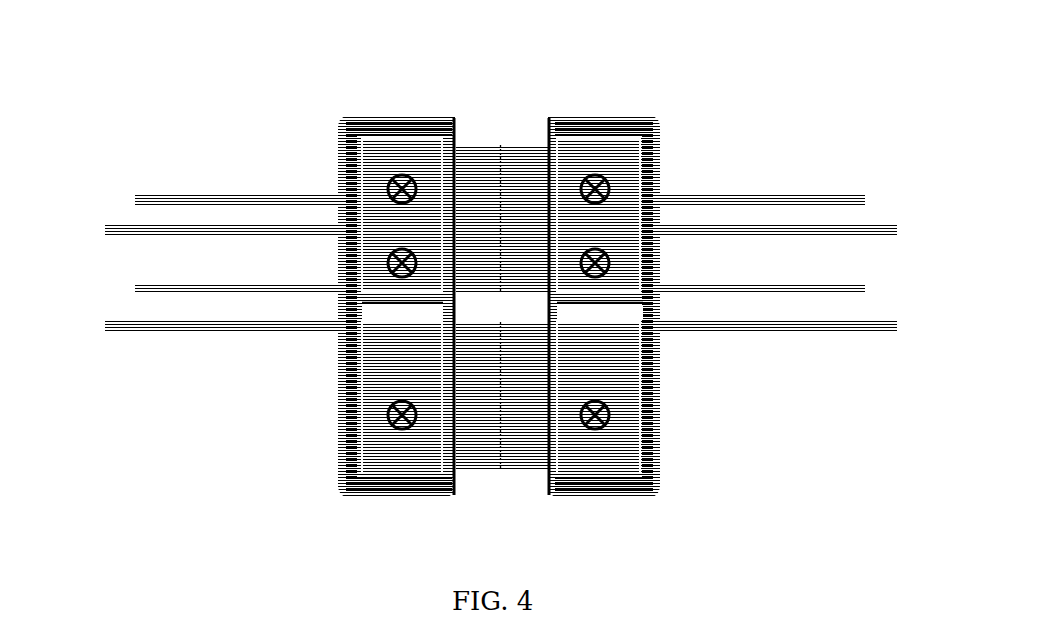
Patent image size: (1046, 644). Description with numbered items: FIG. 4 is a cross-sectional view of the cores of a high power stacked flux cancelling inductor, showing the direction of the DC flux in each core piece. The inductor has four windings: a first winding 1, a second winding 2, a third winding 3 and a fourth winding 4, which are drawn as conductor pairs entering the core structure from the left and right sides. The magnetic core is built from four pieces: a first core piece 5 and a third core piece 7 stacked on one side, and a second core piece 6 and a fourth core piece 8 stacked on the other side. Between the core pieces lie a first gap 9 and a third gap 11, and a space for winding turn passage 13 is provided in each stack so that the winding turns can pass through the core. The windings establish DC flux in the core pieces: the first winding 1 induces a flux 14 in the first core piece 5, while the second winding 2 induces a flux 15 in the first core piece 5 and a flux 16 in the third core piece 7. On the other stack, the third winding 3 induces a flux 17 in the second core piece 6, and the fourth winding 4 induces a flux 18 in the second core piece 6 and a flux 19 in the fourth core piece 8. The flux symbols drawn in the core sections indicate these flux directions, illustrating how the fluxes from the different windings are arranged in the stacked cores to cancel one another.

The first winding 1 is at (105, 229).
The second winding 2 is at (105, 327).
The third winding 3 is at (903, 230).
The fourth winding 4 is at (940, 352).
The first core piece 1A 5 is at (370, 118).
The second core piece 1B 6 is at (632, 118).
The third core piece 2A 7 is at (355, 455).
The fourth core piece 2B 8 is at (660, 457).
The first gap 9 is at (500, 143).
The third gap 11 is at (500, 473).
The space for winding turn passage 13 is at (402, 313).
The flux in core piece 1A induced from first winding 14 is at (387, 189).
The flux in core piece 1A induced from second winding 15 is at (387, 266).
The flux in core piece 2A induced from second winding 16 is at (387, 416).
The flux in core piece 1B induced from third winding 17 is at (610, 186).
The flux in core piece 1B induced from fourth winding 18 is at (612, 270).
The flux in core piece 2B induced from fourth winding 19 is at (610, 415).